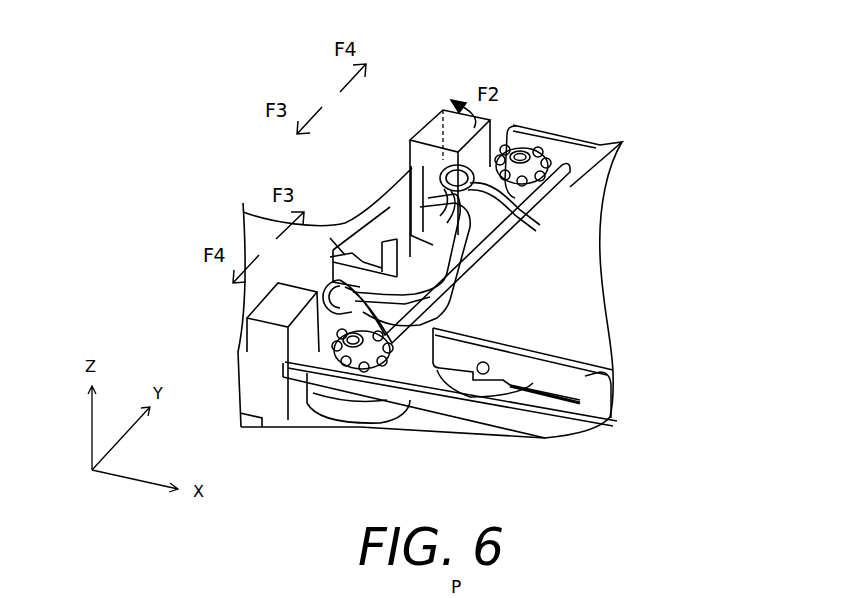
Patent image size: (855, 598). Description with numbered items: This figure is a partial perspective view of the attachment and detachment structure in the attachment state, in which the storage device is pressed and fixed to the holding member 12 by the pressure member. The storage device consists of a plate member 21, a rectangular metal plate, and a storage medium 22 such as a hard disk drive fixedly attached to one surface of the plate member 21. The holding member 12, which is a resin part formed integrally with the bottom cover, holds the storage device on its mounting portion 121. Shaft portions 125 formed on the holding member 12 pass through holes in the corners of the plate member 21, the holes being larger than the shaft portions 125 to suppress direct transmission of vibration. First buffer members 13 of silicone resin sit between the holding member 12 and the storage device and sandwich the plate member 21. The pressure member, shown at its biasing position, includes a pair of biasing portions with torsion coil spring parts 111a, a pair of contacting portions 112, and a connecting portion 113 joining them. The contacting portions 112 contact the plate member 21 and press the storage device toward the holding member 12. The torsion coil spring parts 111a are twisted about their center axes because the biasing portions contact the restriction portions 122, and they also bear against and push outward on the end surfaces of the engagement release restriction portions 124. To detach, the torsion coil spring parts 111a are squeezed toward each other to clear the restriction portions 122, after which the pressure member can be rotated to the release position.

The torsion coil spring part 111a is at (443, 110).
The contacting portion 112 is at (483, 261).
The connecting portion 113 is at (487, 270).
The holding member 12 is at (452, 425).
The mounting portion 121 is at (490, 430).
The restriction portion 122 is at (408, 173).
The engagement release restriction portion 124 is at (443, 110).
The shaft portion 125 is at (363, 362).
The first buffer member 13 is at (320, 368).
The plate member 21 is at (422, 372).
The storage medium 22 is at (547, 378).